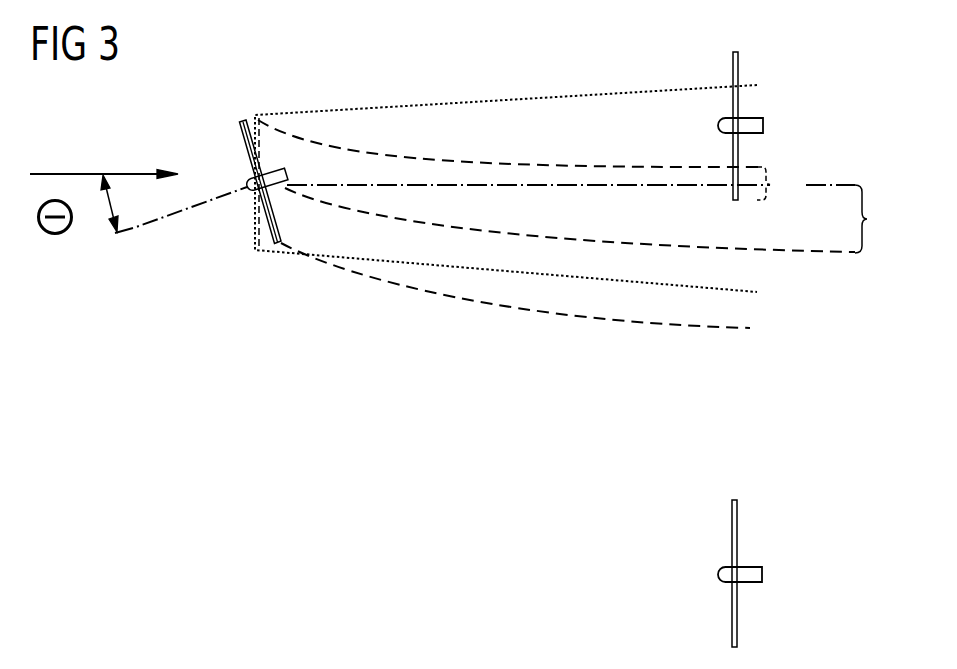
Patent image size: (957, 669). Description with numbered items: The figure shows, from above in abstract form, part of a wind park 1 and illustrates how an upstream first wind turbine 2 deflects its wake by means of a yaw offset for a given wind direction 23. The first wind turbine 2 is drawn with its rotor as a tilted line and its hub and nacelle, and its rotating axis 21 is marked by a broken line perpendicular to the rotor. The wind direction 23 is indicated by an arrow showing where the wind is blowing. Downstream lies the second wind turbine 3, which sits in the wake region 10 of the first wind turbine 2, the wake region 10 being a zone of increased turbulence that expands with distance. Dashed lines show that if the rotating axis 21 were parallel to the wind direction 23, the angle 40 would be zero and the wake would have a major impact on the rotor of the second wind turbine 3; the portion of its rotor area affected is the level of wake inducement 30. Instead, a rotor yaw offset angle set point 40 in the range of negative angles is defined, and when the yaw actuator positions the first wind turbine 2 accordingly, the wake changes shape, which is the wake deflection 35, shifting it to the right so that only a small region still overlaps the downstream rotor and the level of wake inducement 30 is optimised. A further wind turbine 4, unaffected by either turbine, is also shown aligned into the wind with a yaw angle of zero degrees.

The wind park 1 is at (313, 396).
The first wind turbine 2 is at (250, 185).
The second wind turbine 3 is at (763, 126).
The further wind turbine 4 is at (762, 575).
The wake region 10 is at (587, 312).
The rotating axis 21 is at (137, 232).
The wind direction 23 is at (80, 174).
The level of wake inducement 30 is at (780, 184).
The wake deflection 35 is at (878, 219).
The rotor yaw offset angle set point 40 is at (108, 198).